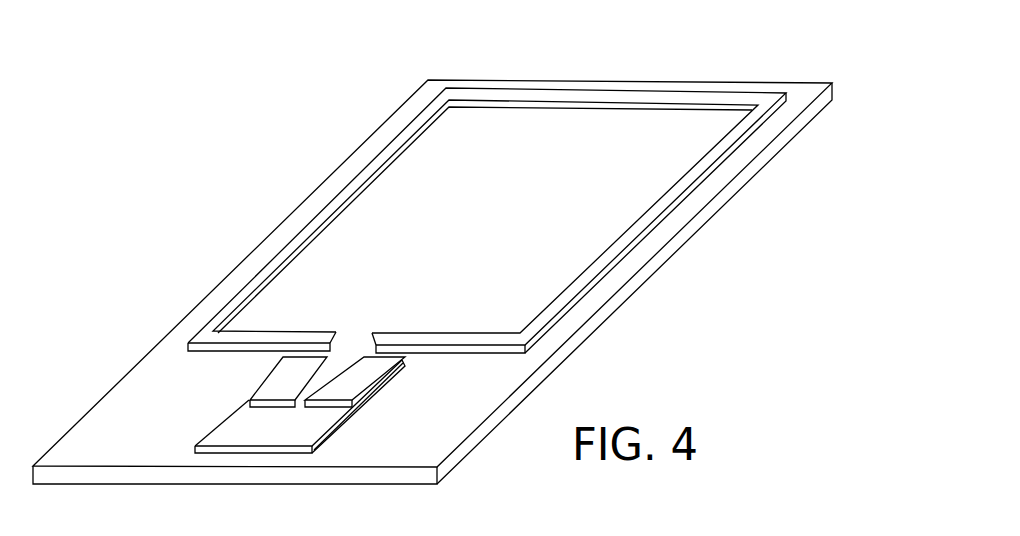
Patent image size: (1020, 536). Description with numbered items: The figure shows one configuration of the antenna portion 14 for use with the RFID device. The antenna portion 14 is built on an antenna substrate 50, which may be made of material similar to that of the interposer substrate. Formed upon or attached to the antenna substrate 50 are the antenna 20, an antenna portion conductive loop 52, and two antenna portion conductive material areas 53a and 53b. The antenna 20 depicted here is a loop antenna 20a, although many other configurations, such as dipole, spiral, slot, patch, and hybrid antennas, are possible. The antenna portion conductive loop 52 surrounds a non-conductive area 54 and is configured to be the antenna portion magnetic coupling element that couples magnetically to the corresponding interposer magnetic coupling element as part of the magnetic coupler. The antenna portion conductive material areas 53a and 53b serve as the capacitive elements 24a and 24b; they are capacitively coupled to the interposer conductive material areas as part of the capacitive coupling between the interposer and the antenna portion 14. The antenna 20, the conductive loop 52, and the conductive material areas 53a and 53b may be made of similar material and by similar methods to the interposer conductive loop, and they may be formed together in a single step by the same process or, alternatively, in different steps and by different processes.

The antenna portion 14 is at (466, 214).
The antenna 20 is at (487, 187).
The loop antenna 20a is at (588, 97).
The capacitive element 24a is at (258, 369).
The capacitive element 24b is at (399, 380).
The antenna substrate 50 is at (64, 455).
The antenna portion conductive loop 52 is at (278, 439).
The antenna portion conductive material area 53a is at (254, 383).
The antenna portion conductive material area 53b is at (362, 384).
The non-conductive area 54 is at (249, 432).